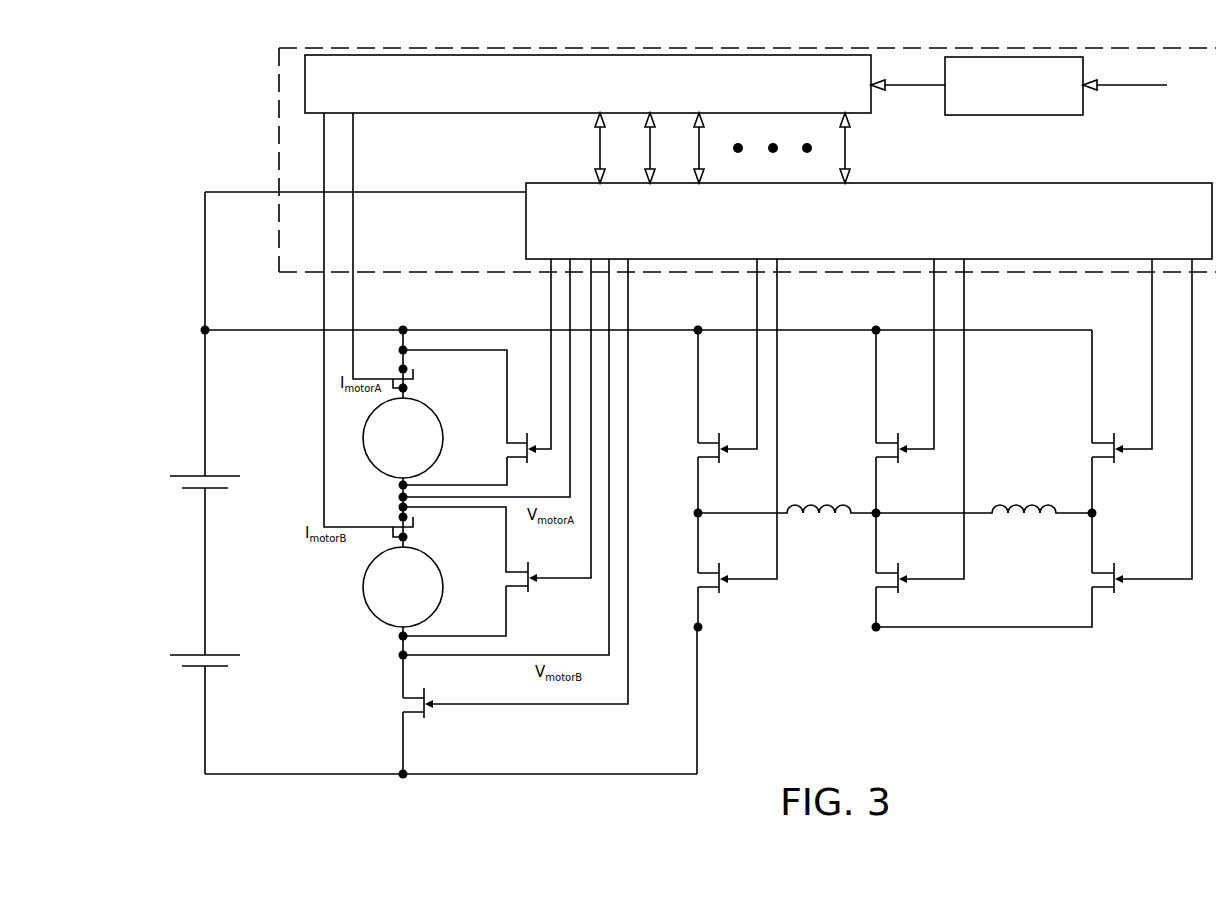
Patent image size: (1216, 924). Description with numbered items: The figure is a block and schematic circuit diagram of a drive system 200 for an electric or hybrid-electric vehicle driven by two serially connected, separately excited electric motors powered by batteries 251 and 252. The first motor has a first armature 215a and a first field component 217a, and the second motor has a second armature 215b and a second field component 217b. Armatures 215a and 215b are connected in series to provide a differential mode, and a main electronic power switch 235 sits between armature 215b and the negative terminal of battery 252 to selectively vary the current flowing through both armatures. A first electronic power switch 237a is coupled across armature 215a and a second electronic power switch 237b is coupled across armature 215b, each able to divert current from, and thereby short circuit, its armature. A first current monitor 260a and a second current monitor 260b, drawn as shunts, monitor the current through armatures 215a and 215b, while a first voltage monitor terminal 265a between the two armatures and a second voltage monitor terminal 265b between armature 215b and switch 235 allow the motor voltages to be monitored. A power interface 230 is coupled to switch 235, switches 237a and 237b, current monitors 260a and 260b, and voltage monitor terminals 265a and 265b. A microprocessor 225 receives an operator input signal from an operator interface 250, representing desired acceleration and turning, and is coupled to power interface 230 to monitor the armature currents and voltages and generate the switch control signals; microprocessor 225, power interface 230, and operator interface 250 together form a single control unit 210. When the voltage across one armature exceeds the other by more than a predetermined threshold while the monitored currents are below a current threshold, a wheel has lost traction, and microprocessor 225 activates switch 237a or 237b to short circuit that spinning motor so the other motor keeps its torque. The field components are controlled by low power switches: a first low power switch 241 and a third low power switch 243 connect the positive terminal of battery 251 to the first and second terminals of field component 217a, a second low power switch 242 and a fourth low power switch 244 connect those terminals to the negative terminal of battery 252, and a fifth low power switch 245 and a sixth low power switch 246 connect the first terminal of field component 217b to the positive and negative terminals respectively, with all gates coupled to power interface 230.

The drive system 200 is at (694, 30).
The control unit 210 is at (279, 96).
The microprocessor 225 is at (418, 55).
The power interface 230 is at (583, 182).
The operator interface 250 is at (1015, 57).
The first armature 215a is at (363, 418).
The second armature 215b is at (380, 618).
The first field component 217a is at (797, 515).
The second field component 217b is at (1015, 515).
The main electronic power switch 235 is at (398, 704).
The first electronic power switch 237a is at (505, 448).
The second electronic power switch 237b is at (505, 580).
The first low power switch 241 is at (697, 446).
The second low power switch 242 is at (697, 575).
The third low power switch 243 is at (876, 448).
The fourth low power switch 244 is at (880, 578).
The fifth low power switch 245 is at (1092, 452).
The sixth low power switch 246 is at (1092, 578).
The battery 251 is at (212, 473).
The battery 252 is at (217, 655).
The first current monitor 260a is at (414, 381).
The second current monitor 260b is at (414, 521).
The first voltage monitor terminal 265a is at (396, 497).
The second voltage monitor terminal 265b is at (400, 656).